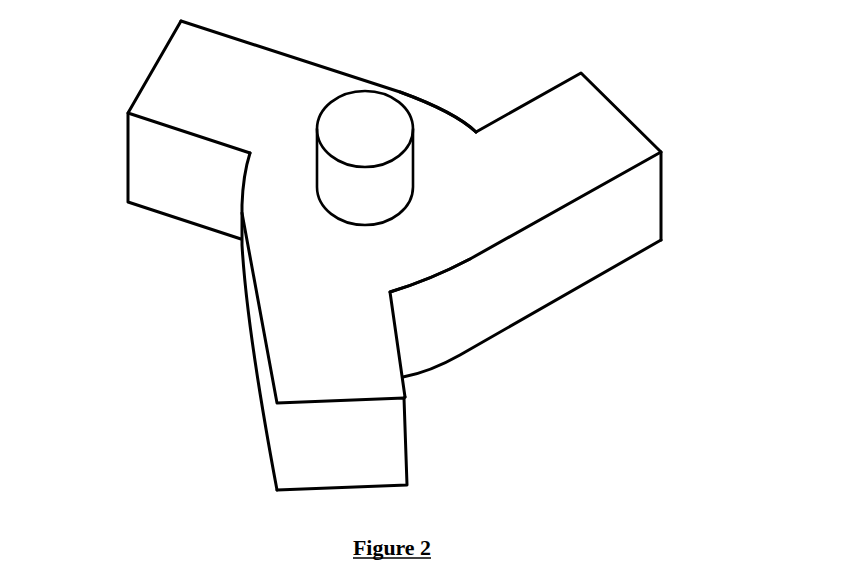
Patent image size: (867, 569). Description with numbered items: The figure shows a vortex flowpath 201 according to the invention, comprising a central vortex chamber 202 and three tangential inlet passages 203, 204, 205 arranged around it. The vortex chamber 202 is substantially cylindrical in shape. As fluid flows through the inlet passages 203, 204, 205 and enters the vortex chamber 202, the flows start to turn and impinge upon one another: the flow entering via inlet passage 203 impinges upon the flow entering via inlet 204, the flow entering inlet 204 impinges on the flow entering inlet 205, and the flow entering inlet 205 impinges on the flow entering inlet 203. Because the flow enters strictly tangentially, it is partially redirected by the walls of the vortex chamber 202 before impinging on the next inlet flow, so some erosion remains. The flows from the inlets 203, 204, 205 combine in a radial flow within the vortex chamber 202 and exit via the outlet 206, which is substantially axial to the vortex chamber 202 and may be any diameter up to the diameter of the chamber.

The vortex flowpath 201 is at (633, 408).
The vortex chamber 202 is at (431, 241).
The tangential inlet passage 203 is at (349, 376).
The tangential inlet passage 204 is at (212, 87).
The tangential inlet passage 205 is at (598, 137).
The outlet 206 is at (361, 137).